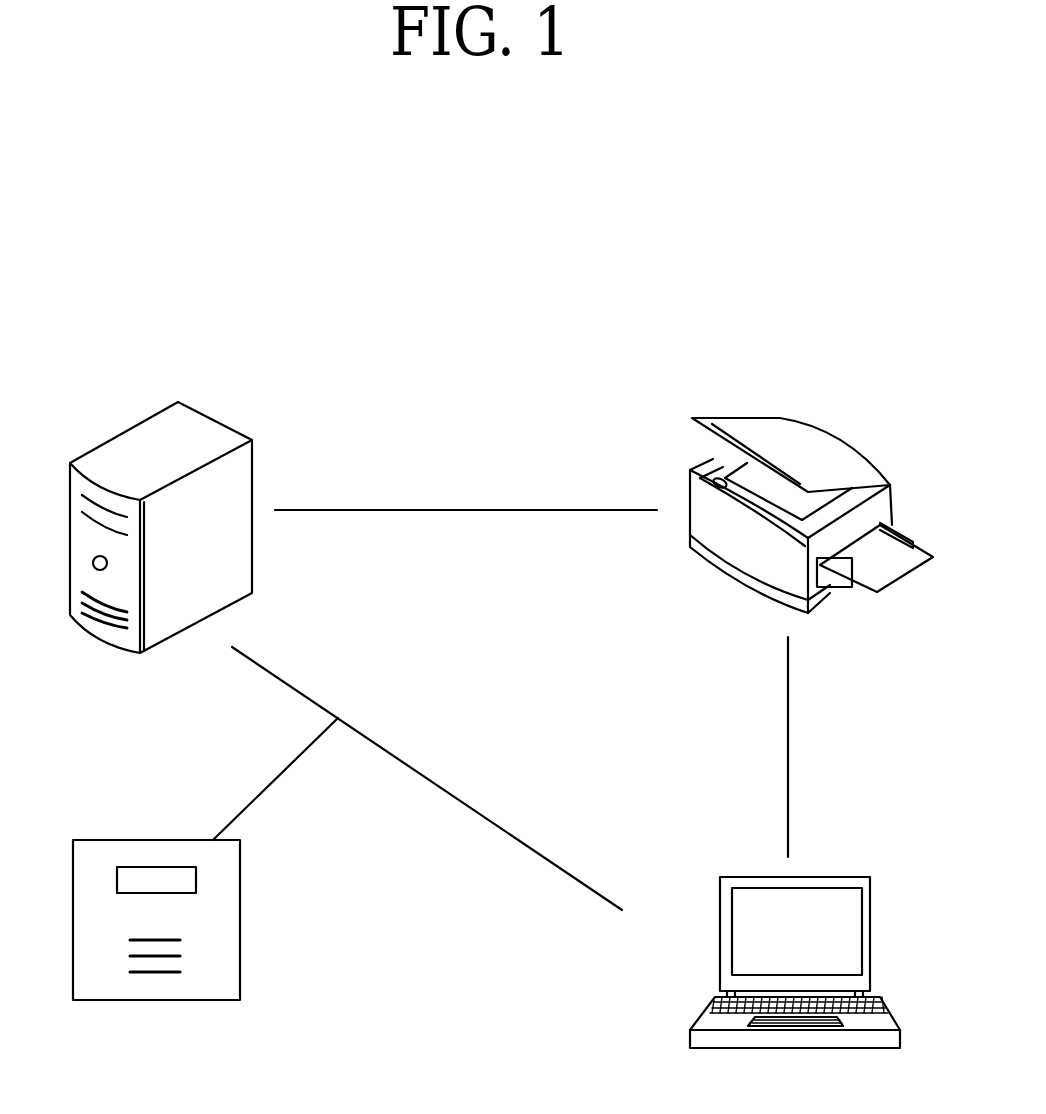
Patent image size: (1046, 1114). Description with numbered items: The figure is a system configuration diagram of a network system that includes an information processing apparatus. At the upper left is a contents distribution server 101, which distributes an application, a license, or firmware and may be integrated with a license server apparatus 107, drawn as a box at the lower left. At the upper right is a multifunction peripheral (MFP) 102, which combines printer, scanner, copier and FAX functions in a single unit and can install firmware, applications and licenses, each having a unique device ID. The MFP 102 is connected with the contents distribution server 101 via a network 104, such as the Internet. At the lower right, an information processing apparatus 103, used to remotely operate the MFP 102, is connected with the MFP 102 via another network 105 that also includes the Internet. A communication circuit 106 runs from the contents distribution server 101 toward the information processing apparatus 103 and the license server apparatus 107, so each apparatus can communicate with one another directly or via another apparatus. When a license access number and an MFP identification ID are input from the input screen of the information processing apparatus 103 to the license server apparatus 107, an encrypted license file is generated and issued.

The contents distribution server 101 is at (213, 418).
The multifunction peripheral (MFP) 102 is at (825, 438).
The information processing apparatus 103 is at (848, 875).
The network 104 is at (457, 510).
The network 105 is at (788, 758).
The communication circuit 106 is at (487, 822).
The license server apparatus 107 is at (160, 1002).